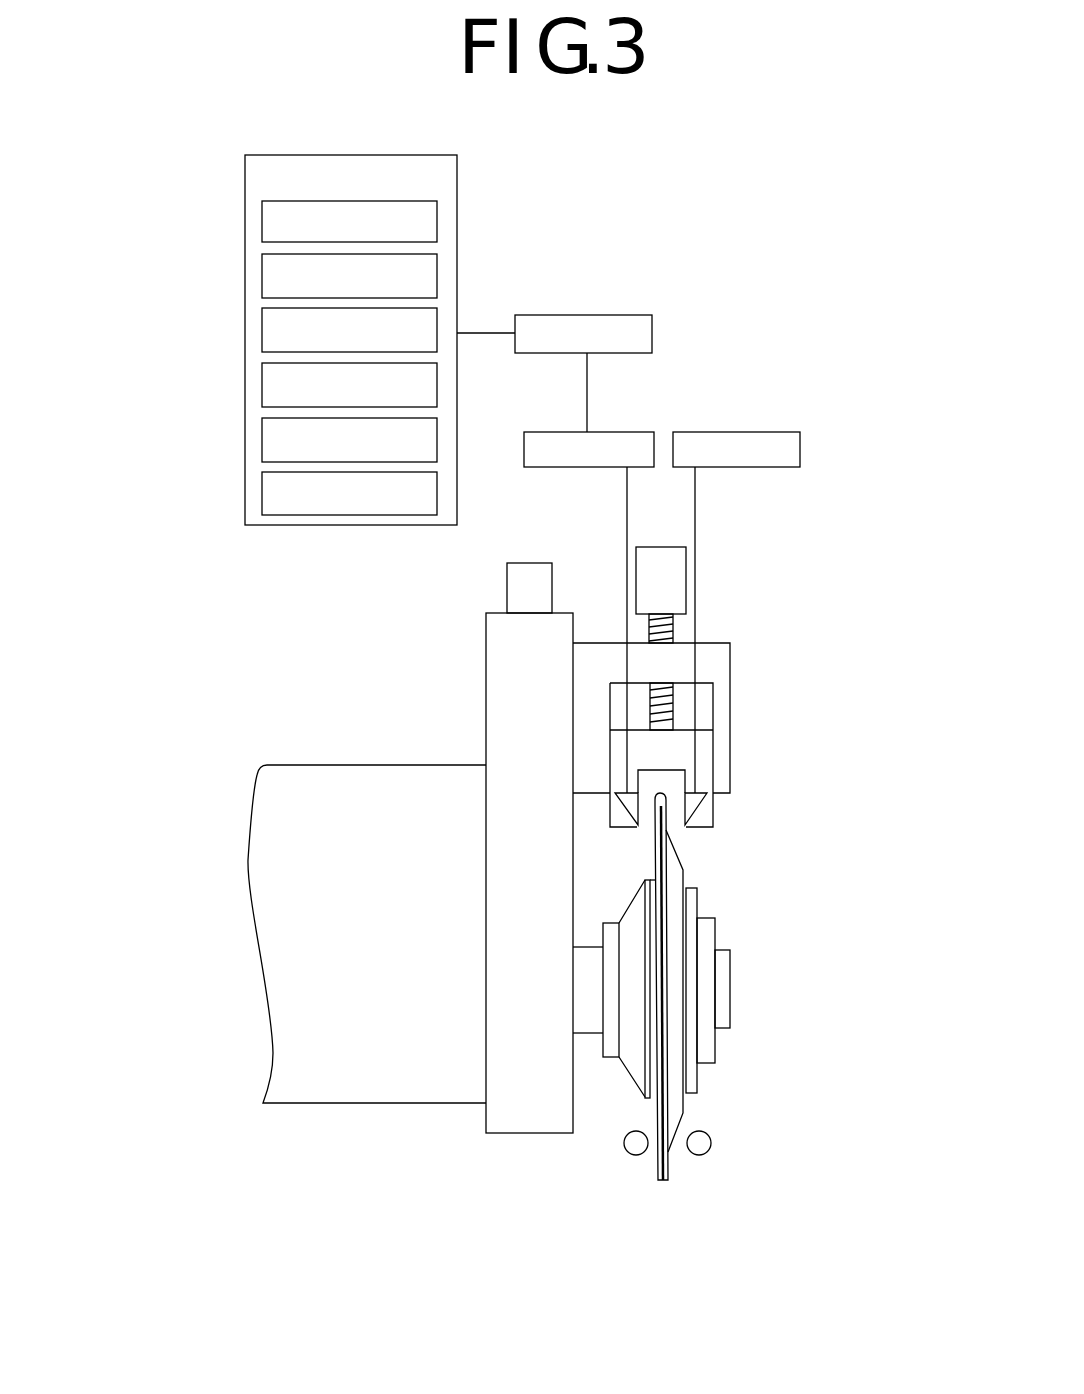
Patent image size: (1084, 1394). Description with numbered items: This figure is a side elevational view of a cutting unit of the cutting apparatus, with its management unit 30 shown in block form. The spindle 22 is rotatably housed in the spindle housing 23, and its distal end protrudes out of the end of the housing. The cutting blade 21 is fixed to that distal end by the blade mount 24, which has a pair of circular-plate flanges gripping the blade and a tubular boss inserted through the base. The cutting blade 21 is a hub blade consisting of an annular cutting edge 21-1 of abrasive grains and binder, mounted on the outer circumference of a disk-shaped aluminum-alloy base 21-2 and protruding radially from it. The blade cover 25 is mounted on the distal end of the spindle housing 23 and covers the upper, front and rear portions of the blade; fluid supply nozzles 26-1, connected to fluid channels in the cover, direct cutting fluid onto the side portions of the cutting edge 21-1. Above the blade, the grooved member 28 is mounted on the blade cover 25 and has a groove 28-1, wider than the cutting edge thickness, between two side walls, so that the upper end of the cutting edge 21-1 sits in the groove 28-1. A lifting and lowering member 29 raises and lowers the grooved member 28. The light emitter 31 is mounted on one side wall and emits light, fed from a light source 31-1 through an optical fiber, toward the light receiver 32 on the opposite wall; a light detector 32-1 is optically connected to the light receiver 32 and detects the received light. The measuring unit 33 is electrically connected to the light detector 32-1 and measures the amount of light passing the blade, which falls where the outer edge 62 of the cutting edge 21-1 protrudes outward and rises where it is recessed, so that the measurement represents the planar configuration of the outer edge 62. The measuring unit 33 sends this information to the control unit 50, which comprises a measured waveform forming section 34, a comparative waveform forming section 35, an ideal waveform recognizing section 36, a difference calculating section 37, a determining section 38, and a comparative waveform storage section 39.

The control unit 50 is at (350, 155).
The measured waveform forming section 34 is at (262, 232).
The comparative waveform forming section 35 is at (262, 291).
The ideal waveform recognizing section 36 is at (262, 337).
The difference calculating section 37 is at (262, 391).
The determining section 38 is at (262, 446).
The comparative waveform storage section 39 is at (262, 502).
The management unit 30 is at (628, 219).
The measuring unit 33 is at (608, 315).
The light detector 32-1 is at (608, 432).
The light source 31-1 is at (757, 432).
The lifting and lowering member 29 is at (660, 547).
The blade cover 25 is at (715, 662).
The grooved member 28 is at (707, 812).
The groove 28-1 is at (684, 775).
The light receiver 32 is at (639, 804).
The light emitter 31 is at (683, 804).
The outer edge 62 is at (654, 839).
The spindle 22 is at (590, 989).
The spindle housing 23 is at (362, 1092).
The cutting blade 21 is at (733, 1024).
The cutting edge 21-1 is at (667, 977).
The base 21-2 is at (675, 1003).
The blade mount 24 is at (718, 1088).
The fluid supply nozzles 26-1 is at (636, 1156).